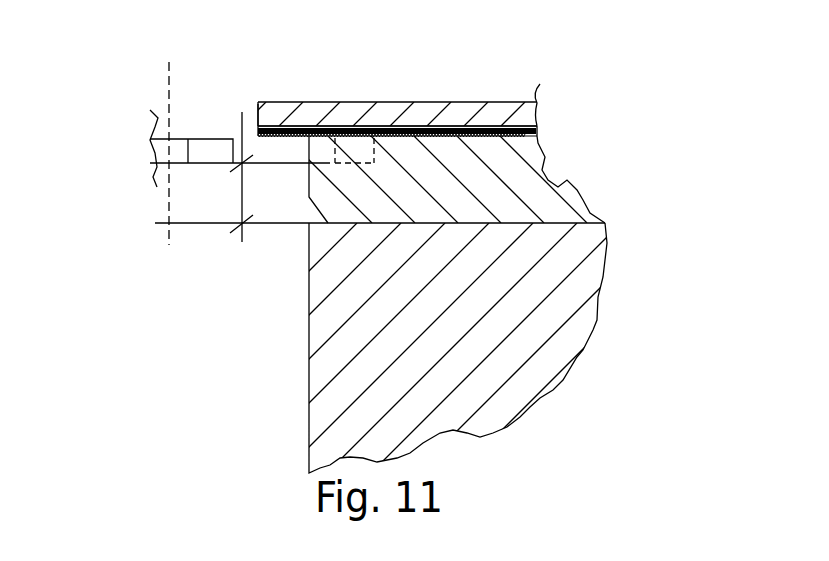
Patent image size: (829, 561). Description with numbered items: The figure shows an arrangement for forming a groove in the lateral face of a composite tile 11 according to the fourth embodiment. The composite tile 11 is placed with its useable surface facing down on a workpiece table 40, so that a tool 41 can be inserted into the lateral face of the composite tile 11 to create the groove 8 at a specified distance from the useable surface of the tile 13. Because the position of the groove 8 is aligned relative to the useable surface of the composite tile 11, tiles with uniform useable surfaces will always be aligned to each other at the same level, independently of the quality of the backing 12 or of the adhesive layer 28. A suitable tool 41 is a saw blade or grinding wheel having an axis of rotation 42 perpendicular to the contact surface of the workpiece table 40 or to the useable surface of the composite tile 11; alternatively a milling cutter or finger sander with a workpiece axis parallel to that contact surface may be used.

The groove 8 is at (338, 127).
The composite tile 11 is at (275, 183).
The backing 12 is at (516, 112).
The tile 13 is at (540, 207).
The adhesive layer 28 is at (260, 138).
The workpiece table 40 is at (327, 373).
The tool 41 is at (207, 150).
The axis of rotation 42 is at (169, 83).